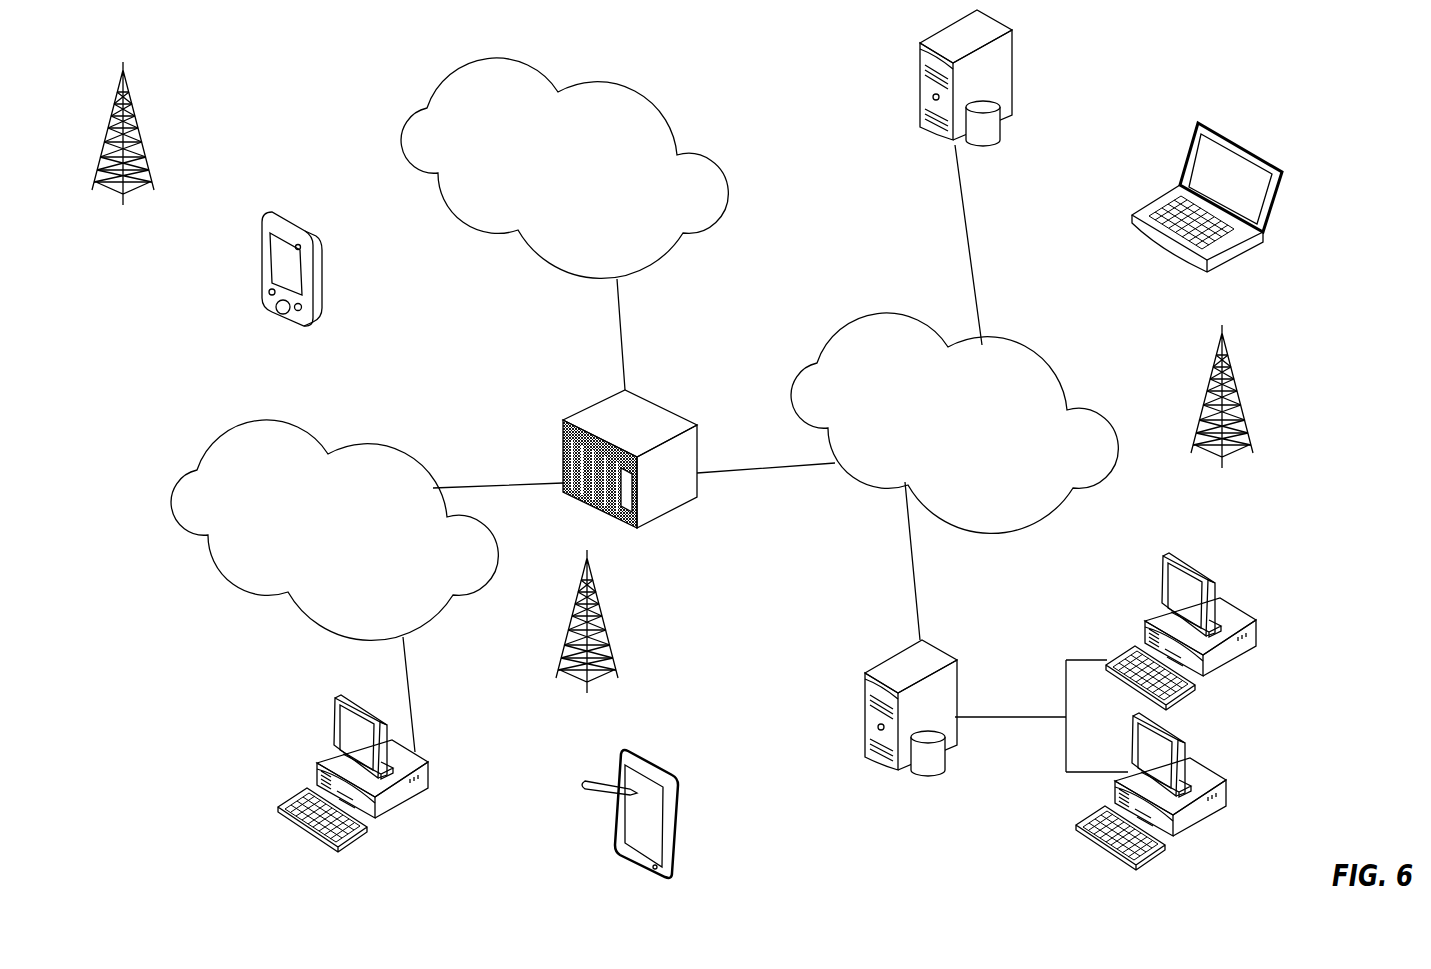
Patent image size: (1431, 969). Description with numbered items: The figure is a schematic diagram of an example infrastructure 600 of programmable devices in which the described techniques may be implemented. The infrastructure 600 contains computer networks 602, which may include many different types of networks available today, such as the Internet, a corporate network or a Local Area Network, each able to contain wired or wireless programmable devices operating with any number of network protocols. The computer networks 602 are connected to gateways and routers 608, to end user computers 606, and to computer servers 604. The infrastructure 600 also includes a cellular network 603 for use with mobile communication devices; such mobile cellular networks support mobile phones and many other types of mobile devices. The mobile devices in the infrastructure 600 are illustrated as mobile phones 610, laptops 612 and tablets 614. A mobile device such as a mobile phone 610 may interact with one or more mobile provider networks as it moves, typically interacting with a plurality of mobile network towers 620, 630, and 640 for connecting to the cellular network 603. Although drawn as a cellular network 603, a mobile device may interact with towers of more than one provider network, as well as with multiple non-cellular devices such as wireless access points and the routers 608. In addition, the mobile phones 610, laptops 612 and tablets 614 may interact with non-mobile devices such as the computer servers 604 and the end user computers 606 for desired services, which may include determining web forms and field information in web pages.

The infrastructure 600 is at (1108, 117).
The computer networks 602 is at (312, 440).
The cellular network 603 is at (615, 97).
The computer servers 604 is at (920, 68).
The end user computers 606 is at (427, 765).
The gateways and routers 608 is at (655, 403).
The mobile phones 610 is at (298, 222).
The laptops 612 is at (1255, 150).
The tablets 614 is at (662, 765).
The mobile network tower 620 is at (587, 636).
The mobile network tower 630 is at (1222, 411).
The mobile network tower 640 is at (123, 148).